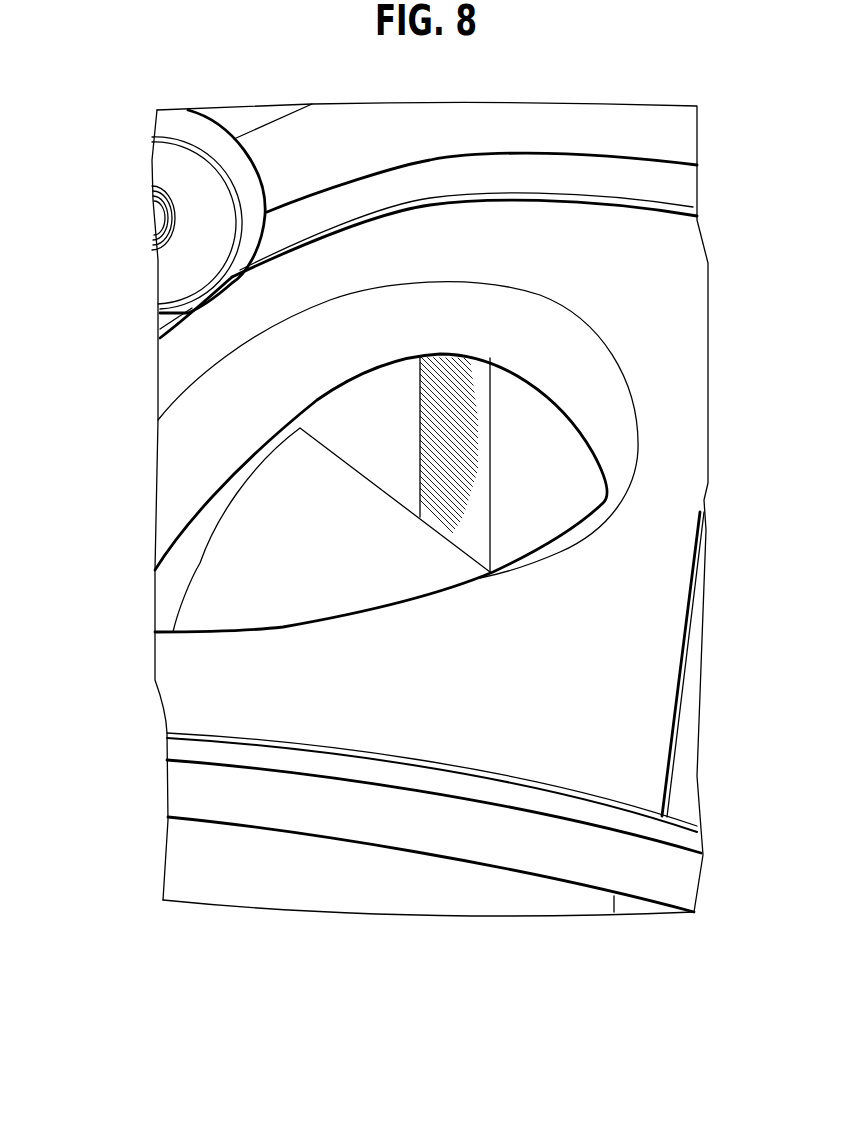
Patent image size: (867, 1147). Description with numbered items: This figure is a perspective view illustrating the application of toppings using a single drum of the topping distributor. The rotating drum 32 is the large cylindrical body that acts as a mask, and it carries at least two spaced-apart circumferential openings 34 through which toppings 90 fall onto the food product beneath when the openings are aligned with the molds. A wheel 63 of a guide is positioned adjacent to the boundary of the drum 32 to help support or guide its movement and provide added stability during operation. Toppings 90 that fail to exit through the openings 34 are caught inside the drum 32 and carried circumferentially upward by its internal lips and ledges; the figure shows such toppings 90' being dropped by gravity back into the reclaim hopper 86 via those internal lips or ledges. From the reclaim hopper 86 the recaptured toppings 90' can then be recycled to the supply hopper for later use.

The rotating drum 32 is at (196, 689).
The circumferential opening 34 is at (250, 530).
The wheel 63 is at (170, 160).
The reclaim hopper 86 is at (186, 853).
The toppings 90 is at (428, 938).
The toppings being dropped back into reclaim hopper 90' is at (591, 419).